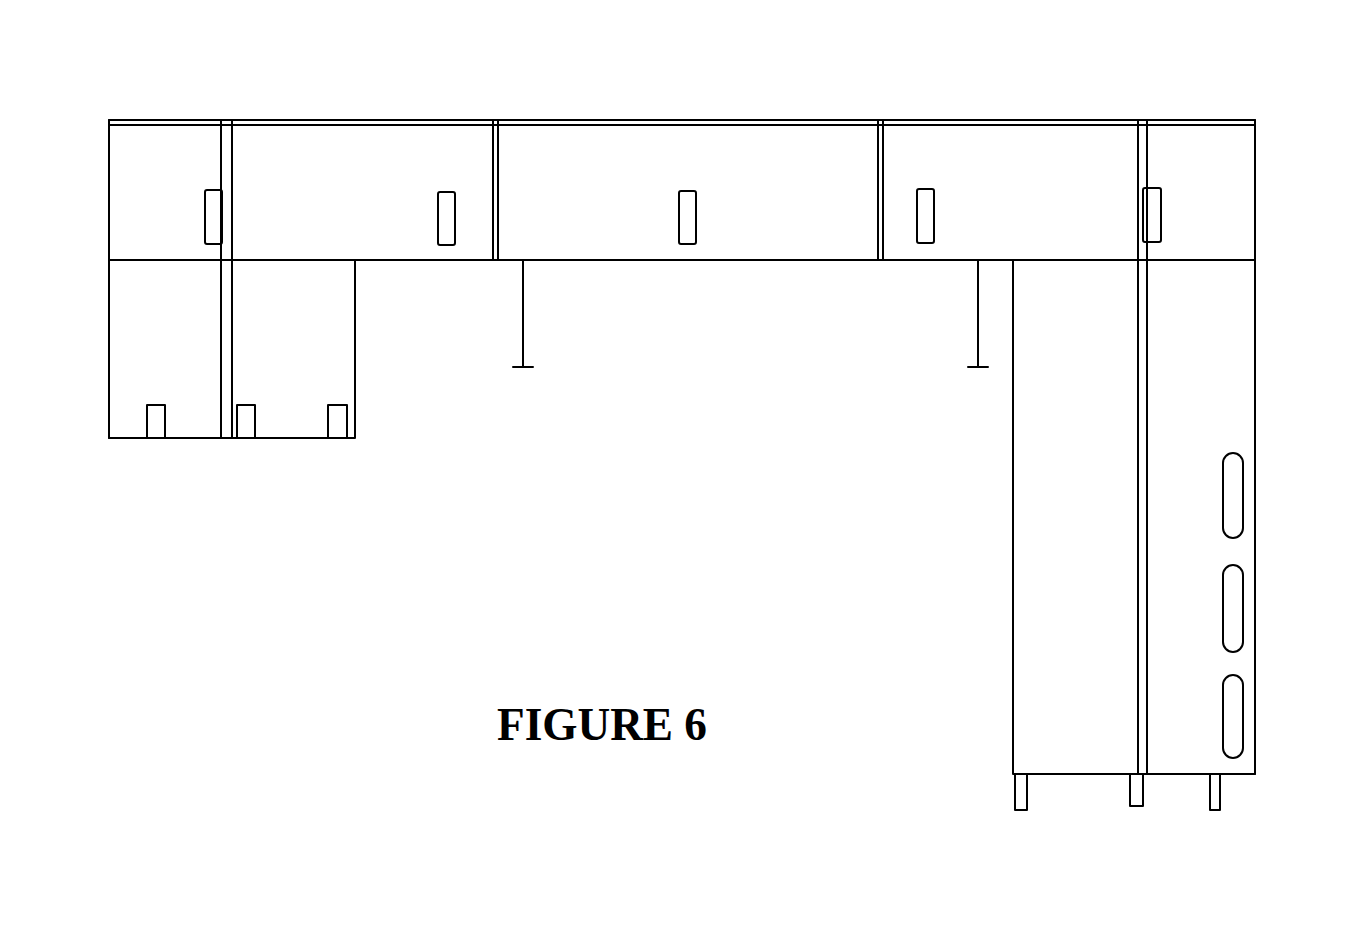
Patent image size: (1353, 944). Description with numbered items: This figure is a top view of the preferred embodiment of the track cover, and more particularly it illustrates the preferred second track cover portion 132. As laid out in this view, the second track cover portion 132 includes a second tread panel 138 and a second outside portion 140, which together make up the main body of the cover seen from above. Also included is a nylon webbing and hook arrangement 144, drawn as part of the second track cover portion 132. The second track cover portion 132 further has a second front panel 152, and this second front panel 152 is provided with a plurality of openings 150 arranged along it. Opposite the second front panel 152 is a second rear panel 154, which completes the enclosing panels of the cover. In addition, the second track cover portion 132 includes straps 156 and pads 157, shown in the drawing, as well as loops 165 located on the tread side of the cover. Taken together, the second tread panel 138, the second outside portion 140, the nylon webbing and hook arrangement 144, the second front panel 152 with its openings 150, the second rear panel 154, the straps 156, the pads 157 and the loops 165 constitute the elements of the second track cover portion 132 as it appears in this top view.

The second track cover portion 132 is at (722, 471).
The second tread panel 138 is at (773, 157).
The second outside portion 140 is at (682, 396).
The nylon webbing and hook arrangement 144 is at (978, 298).
The openings 150 is at (1235, 497).
The second front panel 152 is at (1181, 738).
The second rear panel 154 is at (187, 412).
The straps 156 is at (1028, 795).
The pads 157 is at (337, 428).
The loops 165 is at (443, 217).